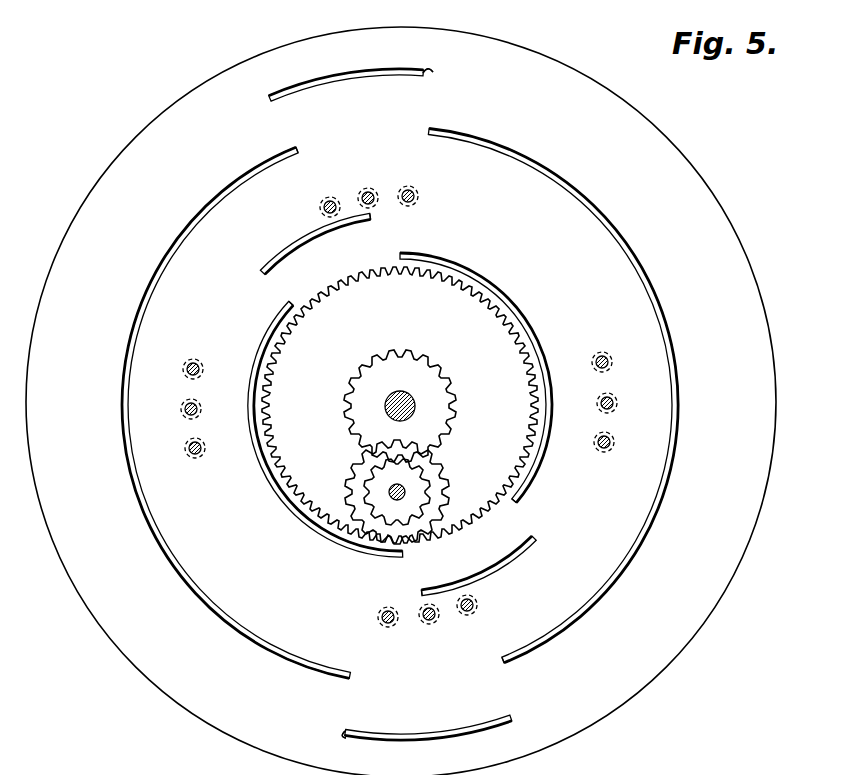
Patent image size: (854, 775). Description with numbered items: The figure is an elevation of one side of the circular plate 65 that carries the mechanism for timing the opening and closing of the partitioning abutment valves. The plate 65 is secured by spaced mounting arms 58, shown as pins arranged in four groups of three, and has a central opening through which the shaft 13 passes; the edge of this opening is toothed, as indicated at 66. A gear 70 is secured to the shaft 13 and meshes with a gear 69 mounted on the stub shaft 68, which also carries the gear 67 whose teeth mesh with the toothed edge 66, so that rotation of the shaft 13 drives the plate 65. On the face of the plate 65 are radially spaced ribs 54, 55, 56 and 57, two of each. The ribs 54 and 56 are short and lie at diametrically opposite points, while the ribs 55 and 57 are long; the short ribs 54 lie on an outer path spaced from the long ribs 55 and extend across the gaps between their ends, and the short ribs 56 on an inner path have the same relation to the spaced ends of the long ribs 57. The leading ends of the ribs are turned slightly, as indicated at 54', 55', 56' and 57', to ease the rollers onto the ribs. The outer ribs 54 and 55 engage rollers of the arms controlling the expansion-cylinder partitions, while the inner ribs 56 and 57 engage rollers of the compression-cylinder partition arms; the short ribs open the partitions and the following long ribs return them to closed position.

The shaft 13 is at (415, 412).
The short rib 54 is at (390, 408).
The turned end of rib 54 54' is at (392, 403).
The long rib 55 is at (400, 404).
The turned end of rib 55 55' is at (416, 401).
The short rib 56 is at (398, 404).
The turned end of rib 56 56' is at (396, 405).
The long rib 57 is at (397, 405).
The turned end of rib 57 57' is at (401, 406).
The mounting arm 58 is at (405, 187).
The circular plate 65 is at (680, 156).
The toothed edge 66 is at (345, 283).
The gear 67 is at (432, 482).
The stub shaft 68 is at (403, 493).
The gear 69 is at (432, 463).
The gear 70 is at (437, 366).